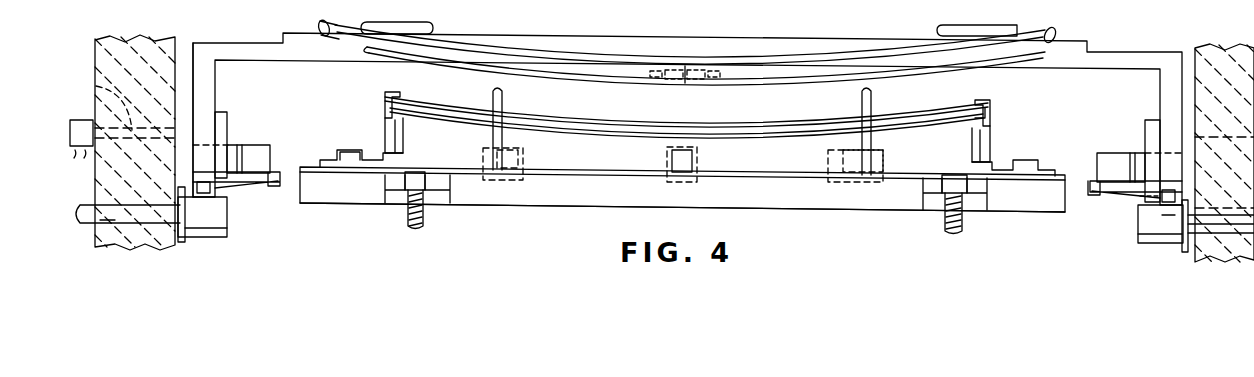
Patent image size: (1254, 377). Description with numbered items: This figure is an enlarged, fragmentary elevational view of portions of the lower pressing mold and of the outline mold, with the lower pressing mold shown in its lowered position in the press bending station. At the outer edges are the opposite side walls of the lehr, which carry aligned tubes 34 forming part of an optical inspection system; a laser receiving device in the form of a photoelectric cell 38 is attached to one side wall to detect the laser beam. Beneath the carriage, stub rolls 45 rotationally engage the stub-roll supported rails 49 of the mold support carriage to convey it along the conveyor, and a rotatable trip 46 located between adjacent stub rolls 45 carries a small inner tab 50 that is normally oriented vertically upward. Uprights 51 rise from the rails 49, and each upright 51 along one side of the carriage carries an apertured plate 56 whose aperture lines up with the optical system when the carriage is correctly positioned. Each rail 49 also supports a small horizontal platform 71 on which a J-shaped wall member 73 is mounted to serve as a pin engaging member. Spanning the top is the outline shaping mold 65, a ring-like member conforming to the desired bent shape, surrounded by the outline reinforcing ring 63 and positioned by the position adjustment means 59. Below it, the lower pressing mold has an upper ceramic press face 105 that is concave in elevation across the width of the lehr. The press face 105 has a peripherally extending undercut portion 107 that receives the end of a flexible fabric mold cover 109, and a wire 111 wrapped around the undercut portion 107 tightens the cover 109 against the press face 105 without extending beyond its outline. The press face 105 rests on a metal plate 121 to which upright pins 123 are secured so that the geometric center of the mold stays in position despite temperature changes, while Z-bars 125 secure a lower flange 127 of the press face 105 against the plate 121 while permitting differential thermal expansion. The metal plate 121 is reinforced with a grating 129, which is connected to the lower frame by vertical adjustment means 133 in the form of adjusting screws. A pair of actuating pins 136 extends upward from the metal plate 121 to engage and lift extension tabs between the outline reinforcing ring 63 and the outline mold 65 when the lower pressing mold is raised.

The tube 34 is at (96, 85).
The photoelectric cell 38 is at (80, 118).
The stub roll 45 is at (225, 230).
The rotatable trip 46 is at (1176, 214).
The stub-roll supported rail 49 is at (213, 190).
The small inner tab 50 is at (1147, 196).
The upright 51 is at (207, 99).
The apertured plate 56 is at (223, 120).
The position adjustment means 59 is at (687, 53).
The outline reinforcing ring 63 is at (475, 58).
The outline shaping mold 65 is at (540, 52).
The horizontal platform 71 is at (270, 184).
The J-shaped wall member 73 is at (238, 132).
The ceramic press face 105 is at (735, 130).
The undercut portion 107 is at (975, 138).
The mold cover 109 is at (556, 118).
The wire 111 is at (990, 122).
The metal plate 121 is at (607, 172).
The upright pin 123 is at (524, 158).
The Z-bar 125 is at (349, 148).
The lower flange 127 is at (373, 150).
The grating 129 is at (502, 202).
The vertical adjustment means 133 is at (423, 220).
The actuating pin 136 is at (504, 92).